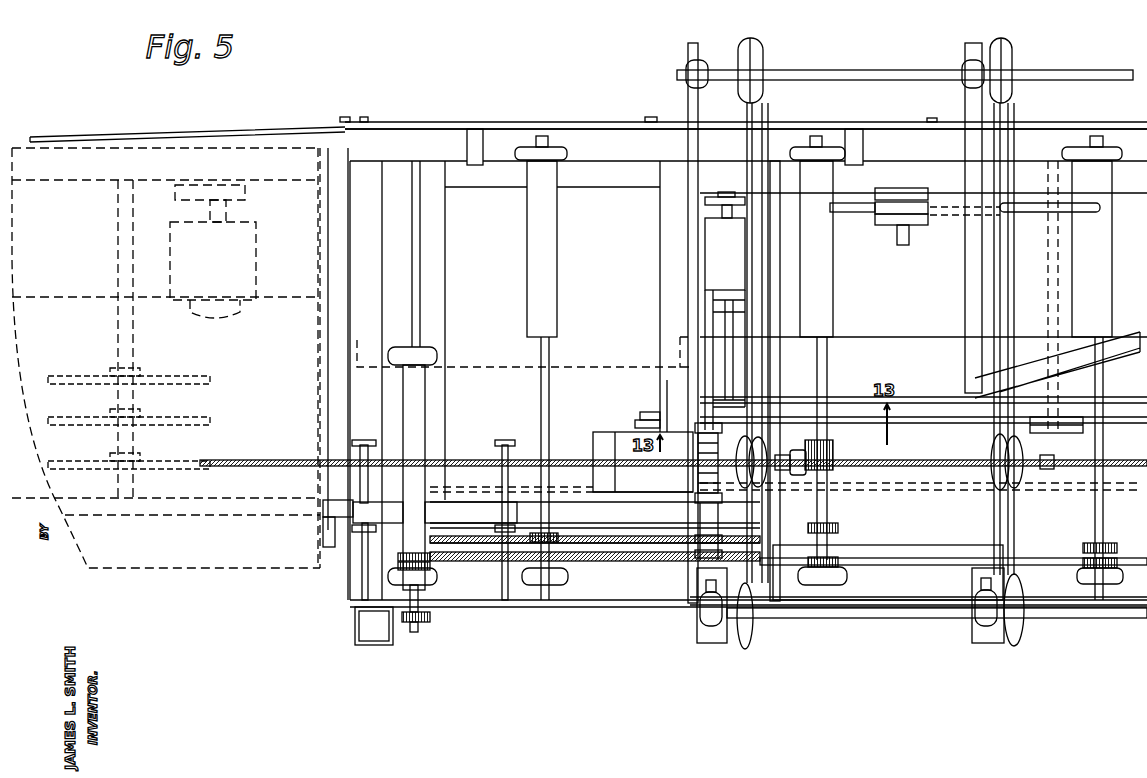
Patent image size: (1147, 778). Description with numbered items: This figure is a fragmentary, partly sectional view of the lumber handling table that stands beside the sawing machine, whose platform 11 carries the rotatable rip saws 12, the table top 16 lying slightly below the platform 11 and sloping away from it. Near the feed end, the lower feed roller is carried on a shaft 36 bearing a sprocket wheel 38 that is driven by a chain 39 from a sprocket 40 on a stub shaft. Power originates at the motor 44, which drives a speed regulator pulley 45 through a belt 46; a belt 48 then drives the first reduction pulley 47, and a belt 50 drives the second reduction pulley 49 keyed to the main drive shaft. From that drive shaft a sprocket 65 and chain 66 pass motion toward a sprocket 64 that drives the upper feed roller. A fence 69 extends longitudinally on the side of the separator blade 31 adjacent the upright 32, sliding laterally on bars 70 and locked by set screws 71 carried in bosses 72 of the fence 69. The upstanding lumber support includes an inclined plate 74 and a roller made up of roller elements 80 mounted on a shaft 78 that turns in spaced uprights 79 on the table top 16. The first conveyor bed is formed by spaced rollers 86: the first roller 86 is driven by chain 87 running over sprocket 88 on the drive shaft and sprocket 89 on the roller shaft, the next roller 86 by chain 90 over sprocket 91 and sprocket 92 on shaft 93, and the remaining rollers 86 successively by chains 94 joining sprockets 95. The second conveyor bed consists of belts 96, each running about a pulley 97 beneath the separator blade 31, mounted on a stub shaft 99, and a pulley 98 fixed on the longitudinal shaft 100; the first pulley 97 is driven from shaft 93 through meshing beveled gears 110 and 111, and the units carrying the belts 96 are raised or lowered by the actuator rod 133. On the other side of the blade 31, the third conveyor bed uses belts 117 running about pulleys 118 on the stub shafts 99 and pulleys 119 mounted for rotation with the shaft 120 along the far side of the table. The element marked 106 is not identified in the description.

The platform 11 is at (255, 150).
The rip saws 12 is at (200, 388).
The table top 16 is at (398, 147).
The separator blade 31 is at (225, 460).
The upright 32 is at (358, 645).
The shaft 36 is at (420, 592).
The sprocket wheel 38 is at (400, 562).
The chain 39 is at (655, 562).
The sprocket 40 is at (722, 570).
The motor 44 is at (705, 262).
The speed regulator pulley 45 is at (882, 213).
The belt 46 is at (778, 210).
The first reduction pulley 47 is at (1073, 213).
The belt 48 is at (958, 218).
The second reduction pulley 49 is at (655, 418).
The belt 50 is at (636, 422).
The sprocket 64 is at (425, 627).
The sprocket 65 is at (700, 556).
The chain 66 is at (636, 556).
The fence 69 is at (335, 510).
The bars 70 is at (355, 450).
The set screws 71 is at (362, 540).
The bosses 72 is at (348, 527).
The inclined plate 74 is at (626, 492).
The shaft 78 is at (705, 332).
The uprights 79 is at (697, 425).
The roller elements 80 is at (698, 473).
The rollers 86 is at (543, 238).
The chain 87 is at (583, 535).
The sprocket 88 is at (698, 545).
The sprocket 89 is at (548, 548).
The chain 90 is at (789, 555).
The sprocket 91 is at (690, 540).
The sprocket 92 is at (838, 528).
The shaft 93 is at (830, 495).
The chains 94 is at (892, 564).
The sprockets 95 is at (838, 562).
The conveyor belts 96 is at (1006, 118).
The pulley 97 is at (763, 443).
The pulley 98 is at (760, 52).
The stub shafts 99 is at (800, 468).
The shaft 100 is at (845, 68).
The block 106 is at (480, 140).
The beveled gear 110 is at (826, 425).
The beveled gear 111 is at (810, 466).
The belts 117 is at (745, 622).
The pulley 118 is at (1102, 430).
The pulley 119 is at (740, 635).
The shaft 120 is at (880, 618).
The actuator rod 133 is at (578, 128).